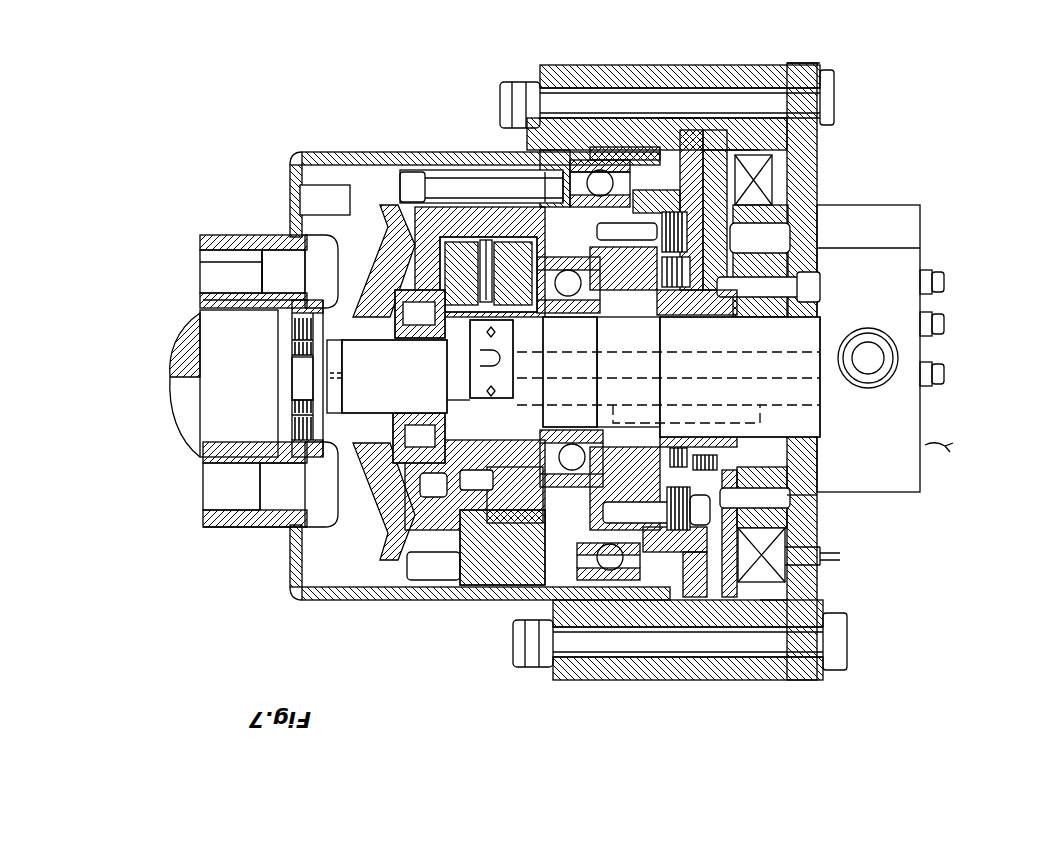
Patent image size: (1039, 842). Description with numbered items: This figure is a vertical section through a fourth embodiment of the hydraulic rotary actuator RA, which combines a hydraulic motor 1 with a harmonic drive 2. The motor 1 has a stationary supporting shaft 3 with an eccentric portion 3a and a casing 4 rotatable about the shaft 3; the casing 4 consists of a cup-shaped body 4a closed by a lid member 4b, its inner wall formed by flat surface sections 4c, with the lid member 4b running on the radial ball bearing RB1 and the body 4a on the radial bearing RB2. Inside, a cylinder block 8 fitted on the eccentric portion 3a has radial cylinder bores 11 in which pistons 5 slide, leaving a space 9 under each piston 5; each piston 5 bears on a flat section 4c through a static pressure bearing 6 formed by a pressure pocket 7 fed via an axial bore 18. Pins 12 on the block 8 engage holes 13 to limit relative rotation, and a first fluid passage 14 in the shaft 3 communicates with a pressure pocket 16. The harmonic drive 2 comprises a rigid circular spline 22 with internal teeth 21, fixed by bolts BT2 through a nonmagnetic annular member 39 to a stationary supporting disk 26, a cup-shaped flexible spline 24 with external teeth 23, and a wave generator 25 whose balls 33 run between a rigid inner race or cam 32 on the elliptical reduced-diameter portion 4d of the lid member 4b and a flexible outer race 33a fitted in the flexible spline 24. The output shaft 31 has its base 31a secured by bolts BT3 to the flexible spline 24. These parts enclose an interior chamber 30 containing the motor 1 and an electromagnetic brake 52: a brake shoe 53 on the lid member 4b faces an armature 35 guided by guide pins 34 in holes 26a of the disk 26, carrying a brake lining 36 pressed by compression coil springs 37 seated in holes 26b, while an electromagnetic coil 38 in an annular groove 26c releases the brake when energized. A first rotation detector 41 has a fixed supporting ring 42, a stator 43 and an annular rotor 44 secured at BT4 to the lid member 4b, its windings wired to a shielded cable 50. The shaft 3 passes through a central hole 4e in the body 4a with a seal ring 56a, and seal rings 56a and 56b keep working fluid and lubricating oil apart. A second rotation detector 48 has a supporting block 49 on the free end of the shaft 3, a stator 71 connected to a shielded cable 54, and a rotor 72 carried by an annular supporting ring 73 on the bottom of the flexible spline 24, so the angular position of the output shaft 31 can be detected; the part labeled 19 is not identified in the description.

The hydraulic motor 1 is at (345, 545).
The harmonic drive 2 is at (550, 685).
The stationary supporting shaft 3 is at (905, 330).
The eccentric portion 3a is at (545, 400).
The casing 4 is at (470, 660).
The cup-shaped body 4a is at (478, 600).
The lid member 4b is at (540, 545).
The flat surface sections 4c is at (462, 560).
The reduced-diameter portion 4d is at (560, 570).
The central hole 4e is at (280, 505).
The pistons 5 is at (395, 238).
The static pressure bearing 6 is at (495, 270).
The pressure pocket 7 is at (485, 300).
The cylinder block 8 is at (520, 525).
The space 9 is at (400, 300).
The cylinder bores 11 is at (470, 240).
The pins 12 is at (420, 575).
The holes 13 is at (362, 480).
The first fluid passage 14 is at (468, 352).
The pressure pocket 16 is at (468, 390).
The axial bore 18 is at (400, 262).
The shaft 19 is at (745, 410).
The internal teeth 21 is at (505, 165).
The rigid circular spline 22 is at (600, 675).
The external teeth 23 is at (655, 118).
The flexible spline 24 is at (330, 600).
The wave generator 25 is at (625, 590).
The stationary supporting disk 26 is at (835, 612).
The axial holes 26a is at (825, 535).
The holes 26b is at (815, 195).
The annular groove 26c is at (800, 190).
The interior chamber 30 is at (690, 535).
The output shaft 31 is at (215, 460).
The base 31a is at (225, 522).
The inner race or cam 32 is at (690, 130).
The balls 33 is at (598, 170).
The outer race 33a is at (600, 160).
The guide pins 34 is at (810, 500).
The armature 35 is at (770, 650).
The brake lining 36 is at (725, 575).
The compression coil springs 37 is at (815, 200).
The electromagnetic coil 38 is at (790, 555).
The annular member 39 is at (735, 150).
The first rotation detector 41 is at (825, 250).
The fixed supporting ring 42 is at (930, 382).
The stator 43 is at (944, 285).
The annular rotor 44 is at (815, 138).
The second rotation detector 48 is at (288, 418).
The supporting block 49 is at (262, 262).
The shielded cable 50 is at (905, 435).
The electromagnetic brake 52 is at (800, 672).
The brake shoe 53 is at (670, 545).
The shielded cable 54 is at (395, 383).
The seal ring 56a is at (345, 330).
The seal ring 56b is at (640, 295).
The stator 71 is at (278, 350).
The rotor 72 is at (278, 333).
The annular supporting ring 73 is at (240, 262).
The bolts BT2 is at (625, 88).
The bolts BT3 is at (218, 248).
The bolts BT4 is at (795, 100).
The hydraulic rotary actuator RA is at (398, 710).
The radial ball bearing RB1 is at (360, 590).
The radial bearing RB2 is at (482, 165).